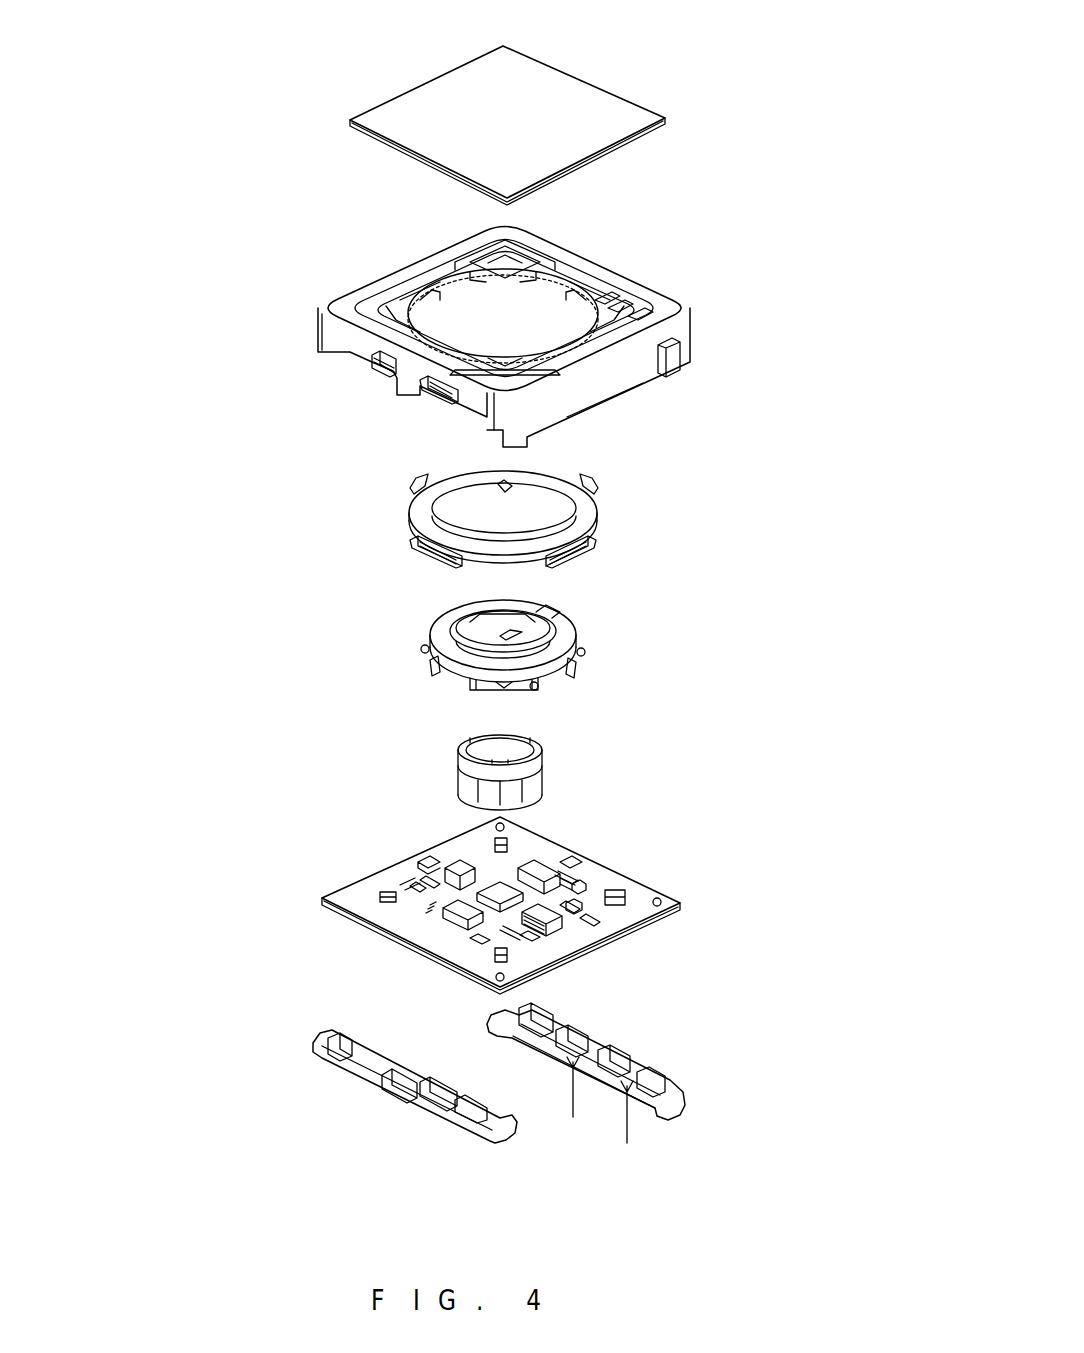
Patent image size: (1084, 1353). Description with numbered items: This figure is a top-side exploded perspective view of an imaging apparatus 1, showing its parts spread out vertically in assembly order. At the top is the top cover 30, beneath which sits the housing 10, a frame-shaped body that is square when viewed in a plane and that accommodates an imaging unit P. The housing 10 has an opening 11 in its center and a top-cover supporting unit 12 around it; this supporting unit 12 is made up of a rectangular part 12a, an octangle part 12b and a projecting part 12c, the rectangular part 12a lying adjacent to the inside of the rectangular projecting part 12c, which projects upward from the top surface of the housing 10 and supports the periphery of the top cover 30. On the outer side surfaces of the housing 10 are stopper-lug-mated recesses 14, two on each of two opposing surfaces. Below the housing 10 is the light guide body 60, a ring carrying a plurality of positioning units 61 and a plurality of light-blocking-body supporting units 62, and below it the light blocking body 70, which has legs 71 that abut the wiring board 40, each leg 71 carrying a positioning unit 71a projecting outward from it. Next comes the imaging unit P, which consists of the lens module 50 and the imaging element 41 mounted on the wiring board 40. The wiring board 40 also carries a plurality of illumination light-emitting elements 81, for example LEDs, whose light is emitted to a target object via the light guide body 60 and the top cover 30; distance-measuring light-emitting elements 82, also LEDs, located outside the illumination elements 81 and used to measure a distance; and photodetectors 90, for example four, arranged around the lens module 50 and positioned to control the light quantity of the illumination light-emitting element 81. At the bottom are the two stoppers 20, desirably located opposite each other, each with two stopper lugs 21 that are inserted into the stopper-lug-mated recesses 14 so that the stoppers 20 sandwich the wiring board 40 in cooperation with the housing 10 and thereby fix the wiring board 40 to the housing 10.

The imaging apparatus 1 is at (250, 93).
The top cover 30 is at (437, 83).
The housing 10 is at (356, 282).
The opening 11 is at (520, 257).
The top-cover supporting unit 12 is at (763, 207).
The rectangular part 12a is at (610, 305).
The octangle part 12b is at (615, 309).
The projecting part 12c is at (637, 314).
The stopper-lug-mated recess 14 is at (377, 364).
The light guide body 60 is at (403, 513).
The positioning unit 61 is at (418, 485).
The light-blocking-body supporting unit 62 is at (505, 486).
The light blocking body 70 is at (425, 637).
The leg 71 is at (520, 636).
The positioning unit 71a is at (582, 652).
The imaging unit P is at (362, 758).
The lens module 50 is at (462, 770).
The imaging element 41 is at (497, 883).
The wiring board 40 is at (356, 878).
The illumination light-emitting element 81 is at (584, 882).
The distance-measuring light-emitting element 82 is at (624, 892).
The photodetector 90 is at (552, 907).
The stopper 20 is at (618, 1032).
The stopper lug 21 is at (601, 1120).